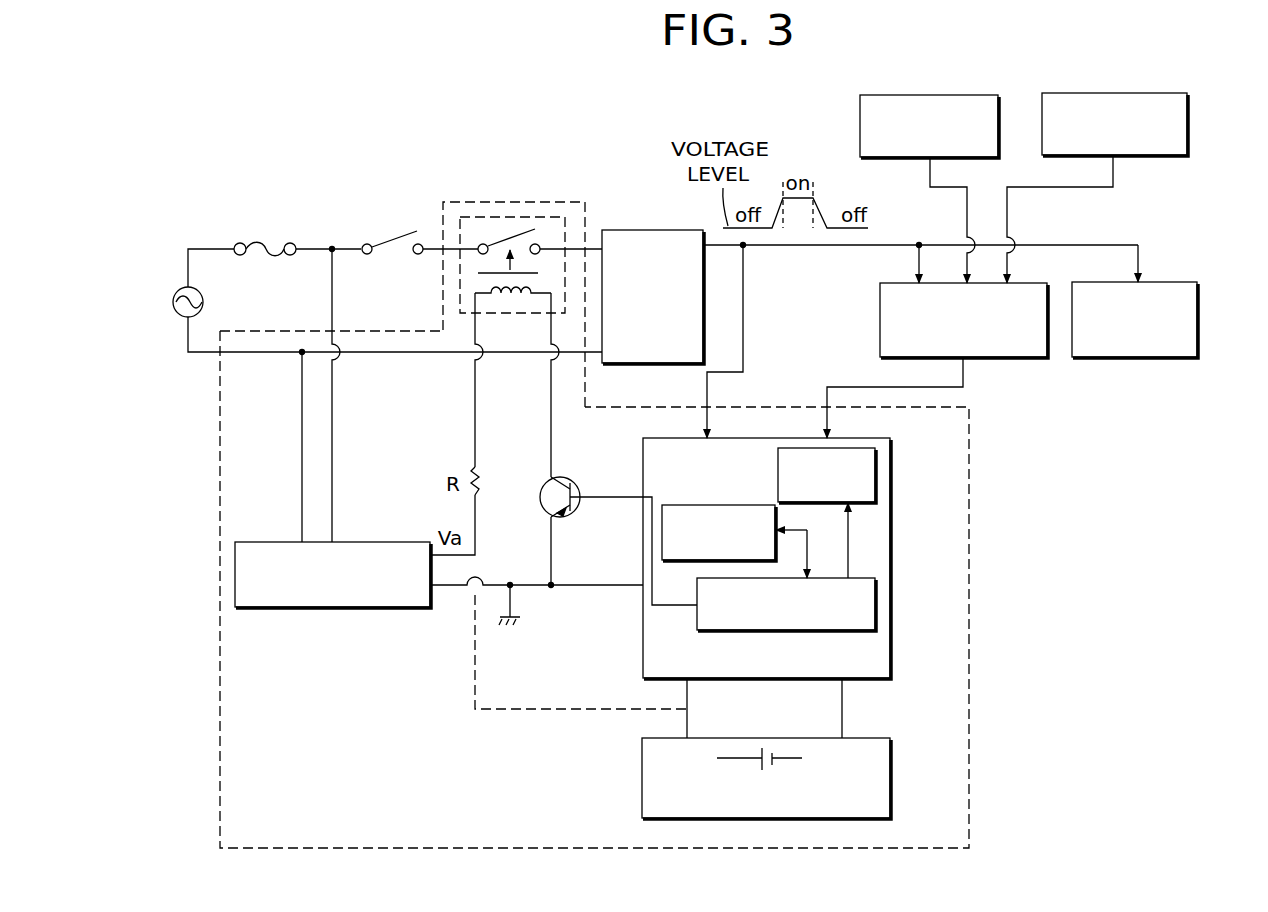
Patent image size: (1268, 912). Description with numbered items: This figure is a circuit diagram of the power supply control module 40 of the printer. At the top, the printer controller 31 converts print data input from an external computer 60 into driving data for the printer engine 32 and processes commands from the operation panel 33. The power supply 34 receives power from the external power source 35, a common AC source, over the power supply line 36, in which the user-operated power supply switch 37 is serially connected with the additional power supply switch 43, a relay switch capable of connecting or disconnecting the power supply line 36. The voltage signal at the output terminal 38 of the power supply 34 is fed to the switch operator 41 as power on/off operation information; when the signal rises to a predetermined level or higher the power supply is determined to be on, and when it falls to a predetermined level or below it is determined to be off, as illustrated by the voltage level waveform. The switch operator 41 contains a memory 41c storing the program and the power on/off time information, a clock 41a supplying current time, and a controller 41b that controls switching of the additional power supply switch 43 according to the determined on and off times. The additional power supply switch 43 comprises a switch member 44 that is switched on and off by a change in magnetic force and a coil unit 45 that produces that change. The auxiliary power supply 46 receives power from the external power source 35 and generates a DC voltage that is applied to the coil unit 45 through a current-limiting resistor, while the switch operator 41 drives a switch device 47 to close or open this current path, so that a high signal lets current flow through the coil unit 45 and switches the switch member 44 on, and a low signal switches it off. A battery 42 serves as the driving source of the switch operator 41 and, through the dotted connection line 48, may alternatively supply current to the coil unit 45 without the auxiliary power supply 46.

The printer controller 31 is at (998, 358).
The printer engine 32 is at (1137, 360).
The operation panel 33 is at (1190, 125).
The power supply 34 is at (655, 230).
The external power source 35 is at (173, 302).
The power supply line 36 is at (433, 254).
The power supply switch 37 is at (386, 232).
The output terminal 38 is at (745, 318).
The power supply control module 40 is at (970, 580).
The switch operator 41 is at (770, 558).
The clock 41a is at (880, 474).
The controller 41b is at (880, 604).
The memory 41c is at (718, 505).
The battery 42 is at (892, 780).
The additional power supply switch 43 is at (546, 217).
The switch member 44 is at (505, 244).
The coil unit 45 is at (515, 300).
The auxiliary power supply 46 is at (332, 612).
The switch device 47 is at (562, 478).
The connection line 48 is at (515, 711).
The computer 60 is at (860, 126).